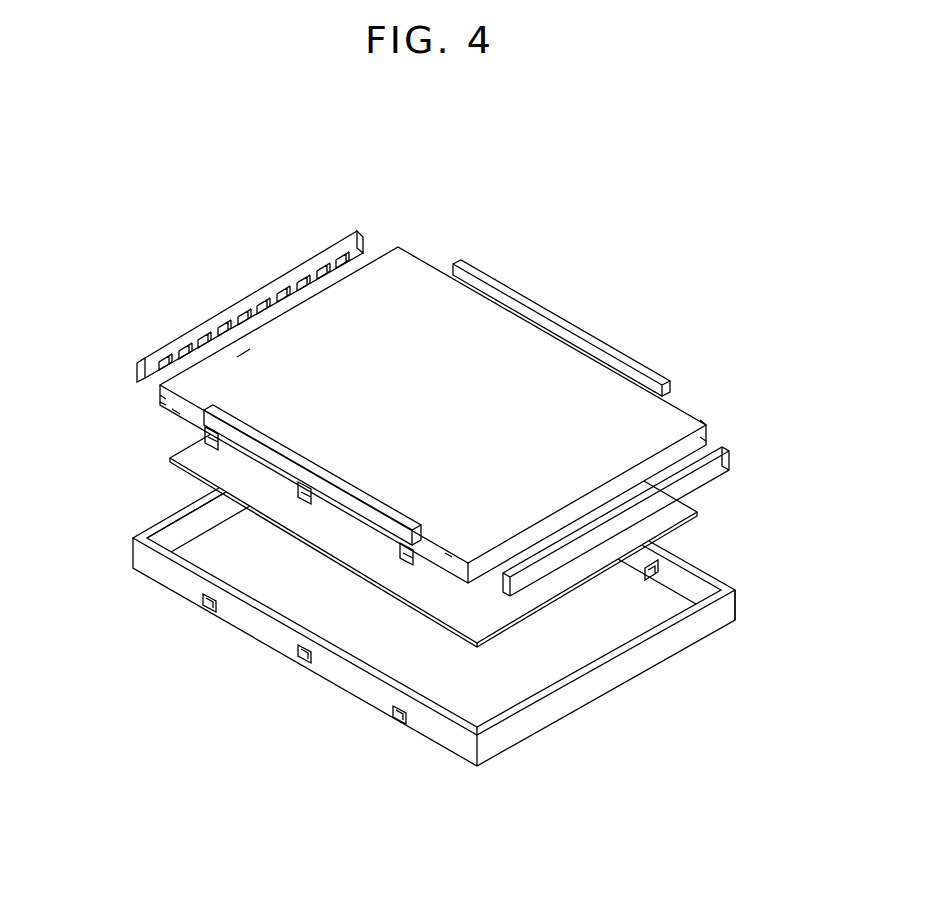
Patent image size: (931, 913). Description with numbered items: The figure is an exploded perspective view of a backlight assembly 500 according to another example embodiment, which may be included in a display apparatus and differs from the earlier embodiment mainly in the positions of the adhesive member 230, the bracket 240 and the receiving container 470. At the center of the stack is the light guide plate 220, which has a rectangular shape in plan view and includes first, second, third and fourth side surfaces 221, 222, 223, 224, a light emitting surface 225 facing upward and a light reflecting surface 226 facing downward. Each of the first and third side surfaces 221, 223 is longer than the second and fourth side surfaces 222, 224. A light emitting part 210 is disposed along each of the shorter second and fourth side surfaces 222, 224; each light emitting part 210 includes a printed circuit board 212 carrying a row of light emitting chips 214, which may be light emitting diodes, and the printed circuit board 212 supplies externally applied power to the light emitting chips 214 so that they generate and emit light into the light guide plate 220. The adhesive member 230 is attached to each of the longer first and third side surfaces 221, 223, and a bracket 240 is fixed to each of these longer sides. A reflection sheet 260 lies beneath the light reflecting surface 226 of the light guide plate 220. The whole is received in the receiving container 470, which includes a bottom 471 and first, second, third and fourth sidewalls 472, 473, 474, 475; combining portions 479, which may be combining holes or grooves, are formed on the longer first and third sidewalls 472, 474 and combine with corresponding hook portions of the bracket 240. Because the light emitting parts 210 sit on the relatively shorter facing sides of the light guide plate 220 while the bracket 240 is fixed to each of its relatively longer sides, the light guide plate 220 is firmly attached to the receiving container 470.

The backlight assembly 500 is at (296, 208).
The light emitting part 210 is at (412, 413).
The printed circuit board 212 is at (140, 368).
The light emitting chips 214 is at (157, 343).
The light guide plate 220 is at (719, 434).
The first side surface 221 is at (680, 410).
The second side surface 222 is at (710, 436).
The third side surface 223 is at (160, 403).
The fourth side surface 224 is at (163, 398).
The light emitting surface 225 is at (237, 356).
The light reflecting surface 226 is at (177, 412).
The adhesive member 230 is at (448, 556).
The bracket 240 is at (572, 342).
The reflection sheet 260 is at (546, 600).
The receiving container 470 is at (430, 632).
The bottom 471 is at (280, 588).
The first sidewall 472 is at (715, 580).
The second sidewall 473 is at (734, 602).
The third sidewall 474 is at (172, 582).
The fourth sidewall 475 is at (150, 532).
The combining portions 479 is at (395, 725).